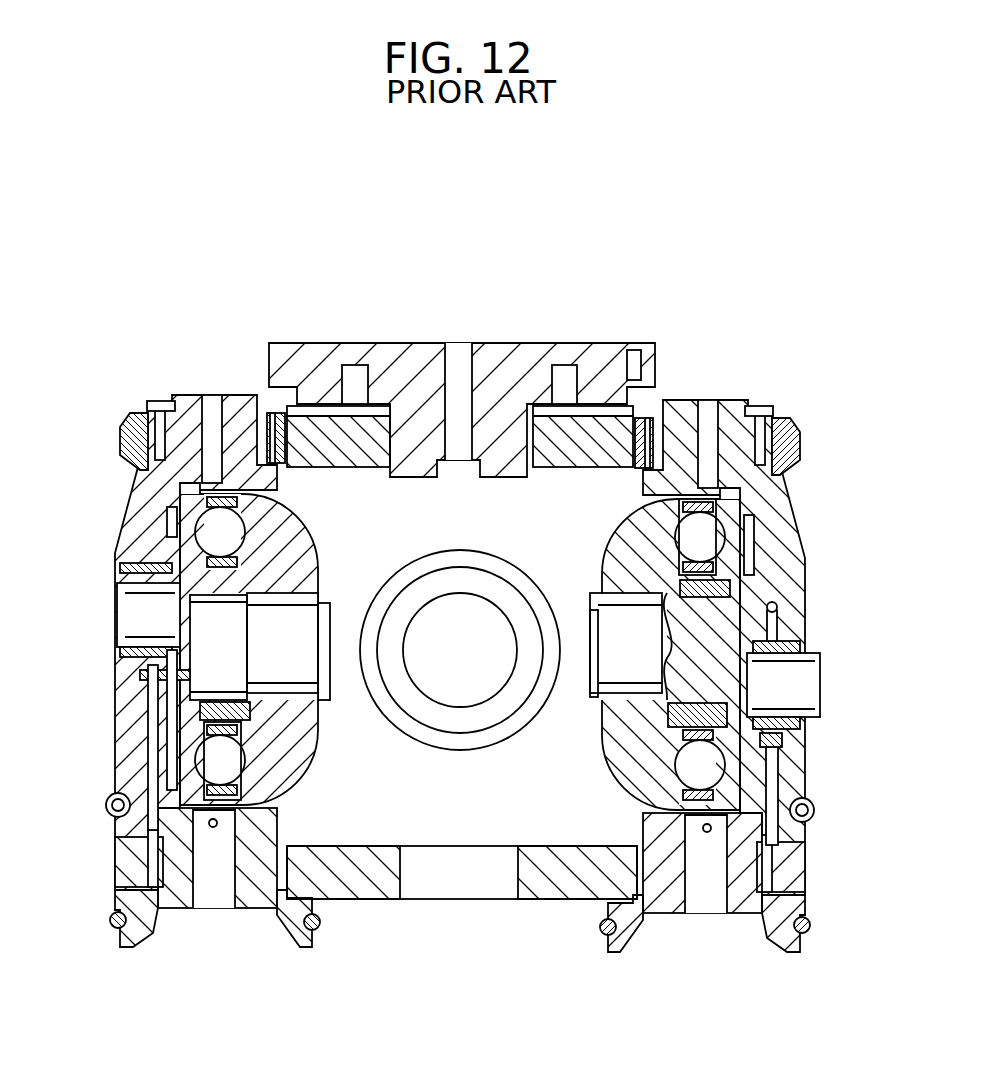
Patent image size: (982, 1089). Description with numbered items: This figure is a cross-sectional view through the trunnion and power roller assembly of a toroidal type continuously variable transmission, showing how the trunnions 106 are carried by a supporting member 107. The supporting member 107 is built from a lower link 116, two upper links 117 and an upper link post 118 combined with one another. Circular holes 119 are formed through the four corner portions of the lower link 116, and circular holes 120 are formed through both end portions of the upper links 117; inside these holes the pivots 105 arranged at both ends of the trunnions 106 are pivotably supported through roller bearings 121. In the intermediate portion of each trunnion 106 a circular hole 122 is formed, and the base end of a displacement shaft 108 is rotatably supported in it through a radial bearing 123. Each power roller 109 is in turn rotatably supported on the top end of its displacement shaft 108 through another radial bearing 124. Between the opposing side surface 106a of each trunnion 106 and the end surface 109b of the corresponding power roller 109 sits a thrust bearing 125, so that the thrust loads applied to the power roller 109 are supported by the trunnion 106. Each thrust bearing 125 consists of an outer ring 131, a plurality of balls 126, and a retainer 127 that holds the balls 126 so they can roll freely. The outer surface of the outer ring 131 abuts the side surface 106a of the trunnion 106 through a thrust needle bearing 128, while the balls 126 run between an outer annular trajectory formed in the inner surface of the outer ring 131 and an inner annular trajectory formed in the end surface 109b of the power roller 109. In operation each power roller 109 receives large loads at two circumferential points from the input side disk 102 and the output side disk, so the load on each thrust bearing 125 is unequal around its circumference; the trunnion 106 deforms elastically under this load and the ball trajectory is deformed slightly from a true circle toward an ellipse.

The input side disk 102 is at (455, 557).
The pivot 105 is at (190, 410).
The trunnion 106 is at (128, 750).
The side surface of trunnion 106a is at (168, 520).
The supporting member 107 is at (507, 342).
The displacement shaft 108 is at (310, 627).
The power roller 109 is at (313, 533).
The end surface of power roller 109b is at (178, 494).
The lower link 116 is at (553, 890).
The upper link 117 is at (617, 430).
The upper link post 118 is at (412, 360).
The circular hole 119 is at (148, 856).
The circular hole 120 is at (150, 410).
The roller bearing 121 is at (128, 440).
The circular hole 122 is at (140, 637).
The radial bearing 123 is at (118, 588).
The radial bearing 124 is at (290, 712).
The thrust bearing 125 is at (203, 760).
The ball 126 is at (230, 527).
The retainer 127 is at (185, 713).
The thrust needle bearing 128 is at (140, 675).
The outer ring 131 is at (730, 752).